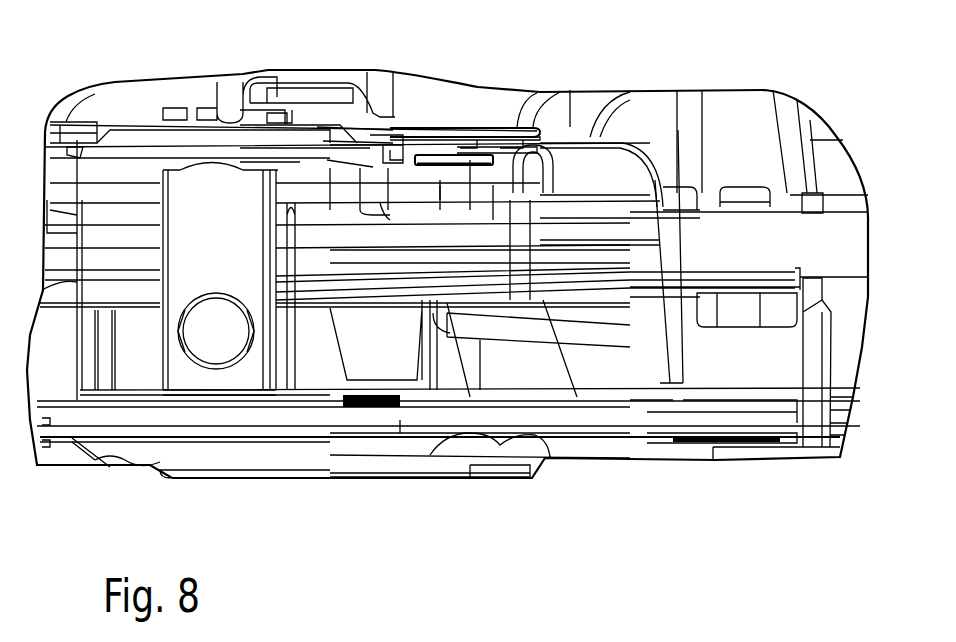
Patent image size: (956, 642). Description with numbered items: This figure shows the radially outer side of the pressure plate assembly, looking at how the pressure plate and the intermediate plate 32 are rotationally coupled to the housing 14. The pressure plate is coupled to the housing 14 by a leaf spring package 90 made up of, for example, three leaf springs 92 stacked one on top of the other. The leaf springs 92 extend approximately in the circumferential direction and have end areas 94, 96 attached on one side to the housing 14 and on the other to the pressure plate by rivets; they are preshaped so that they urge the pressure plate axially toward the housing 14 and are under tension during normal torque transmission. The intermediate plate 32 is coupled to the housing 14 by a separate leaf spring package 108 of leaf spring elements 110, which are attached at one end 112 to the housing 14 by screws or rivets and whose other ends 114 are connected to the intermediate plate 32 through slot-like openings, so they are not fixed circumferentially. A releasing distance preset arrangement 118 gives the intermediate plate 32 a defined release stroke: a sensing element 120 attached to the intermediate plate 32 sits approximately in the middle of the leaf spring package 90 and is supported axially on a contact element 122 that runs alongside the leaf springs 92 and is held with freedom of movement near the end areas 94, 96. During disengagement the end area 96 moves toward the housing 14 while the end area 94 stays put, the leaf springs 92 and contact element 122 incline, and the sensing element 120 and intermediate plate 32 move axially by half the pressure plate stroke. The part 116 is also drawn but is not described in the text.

The housing wall 32 is at (60, 385).
The adjustment device 90 is at (408, 114).
The slide bar 92 is at (427, 128).
The arched support 94 is at (510, 125).
The housing cover 96 is at (66, 122).
The lever 108 is at (545, 300).
The carrier block 110 is at (593, 273).
The guide 112 is at (700, 263).
The connecting rod 114 is at (448, 318).
The push rod 116 is at (408, 280).
The drive region 118 is at (324, 363).
The bearing block 120 is at (245, 368).
The cover plate 122 is at (180, 130).
The housing 14 is at (565, 640).